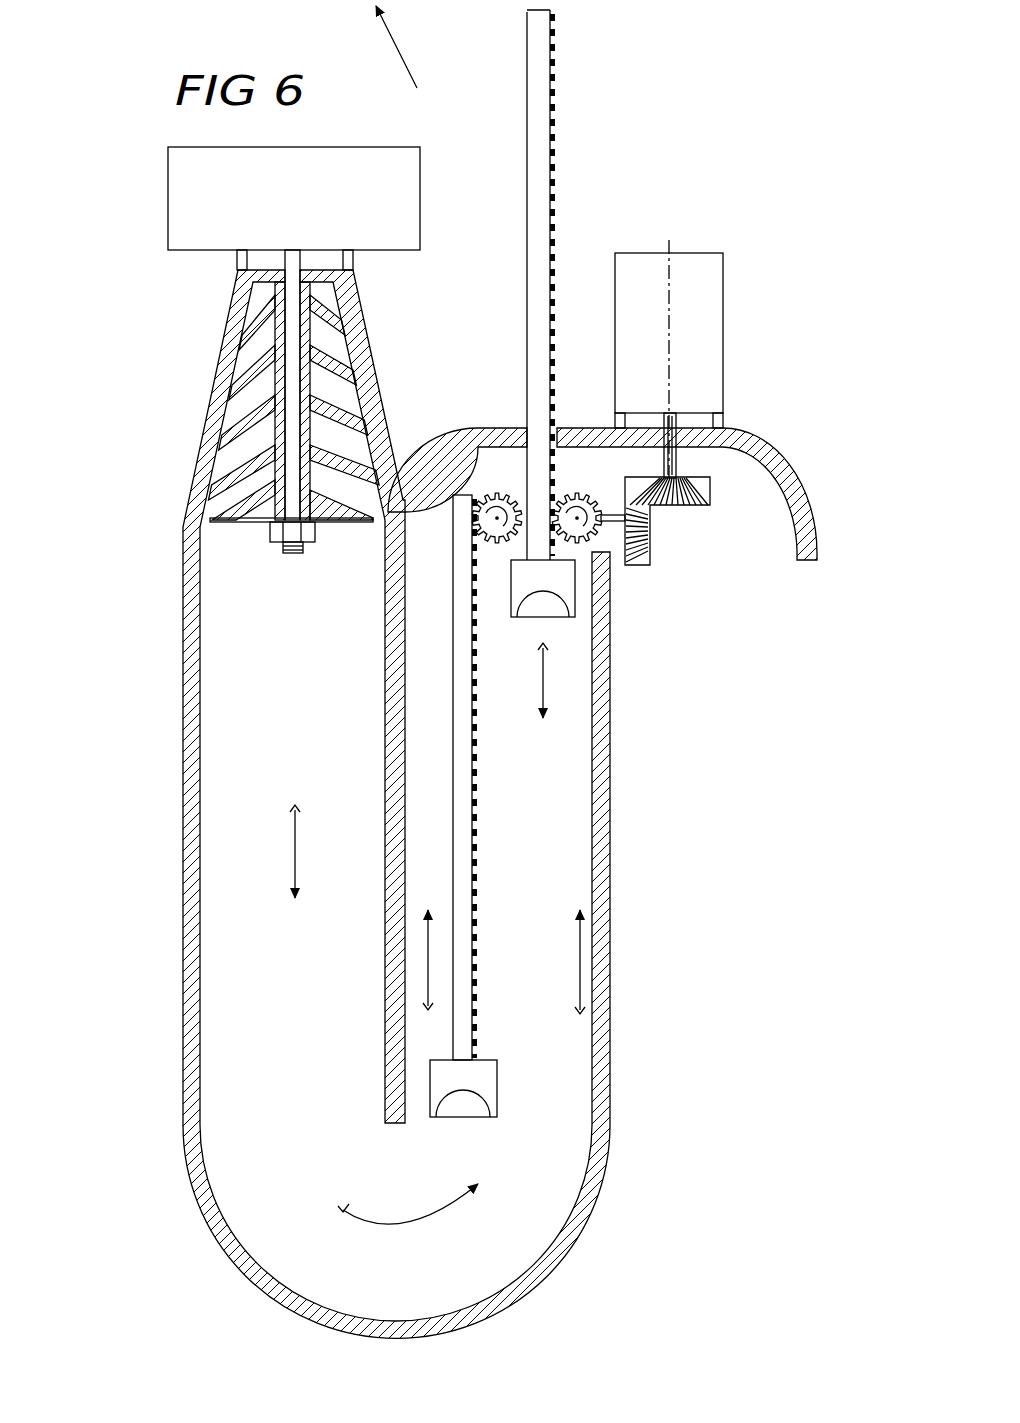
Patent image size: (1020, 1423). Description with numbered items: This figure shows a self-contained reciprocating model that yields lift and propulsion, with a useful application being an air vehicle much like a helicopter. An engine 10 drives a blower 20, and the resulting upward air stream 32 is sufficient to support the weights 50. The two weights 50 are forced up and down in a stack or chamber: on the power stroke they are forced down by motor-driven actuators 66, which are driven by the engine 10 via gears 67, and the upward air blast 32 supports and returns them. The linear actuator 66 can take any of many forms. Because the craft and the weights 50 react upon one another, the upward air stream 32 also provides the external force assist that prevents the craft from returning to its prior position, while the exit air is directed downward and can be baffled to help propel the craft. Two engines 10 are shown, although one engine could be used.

The engine 10 is at (163, 232).
The blower 20 is at (240, 392).
The upward air stream 32 is at (660, 982).
The weights 50 is at (575, 590).
The motor-driven actuators 66 is at (506, 460).
The gears 67 is at (706, 500).